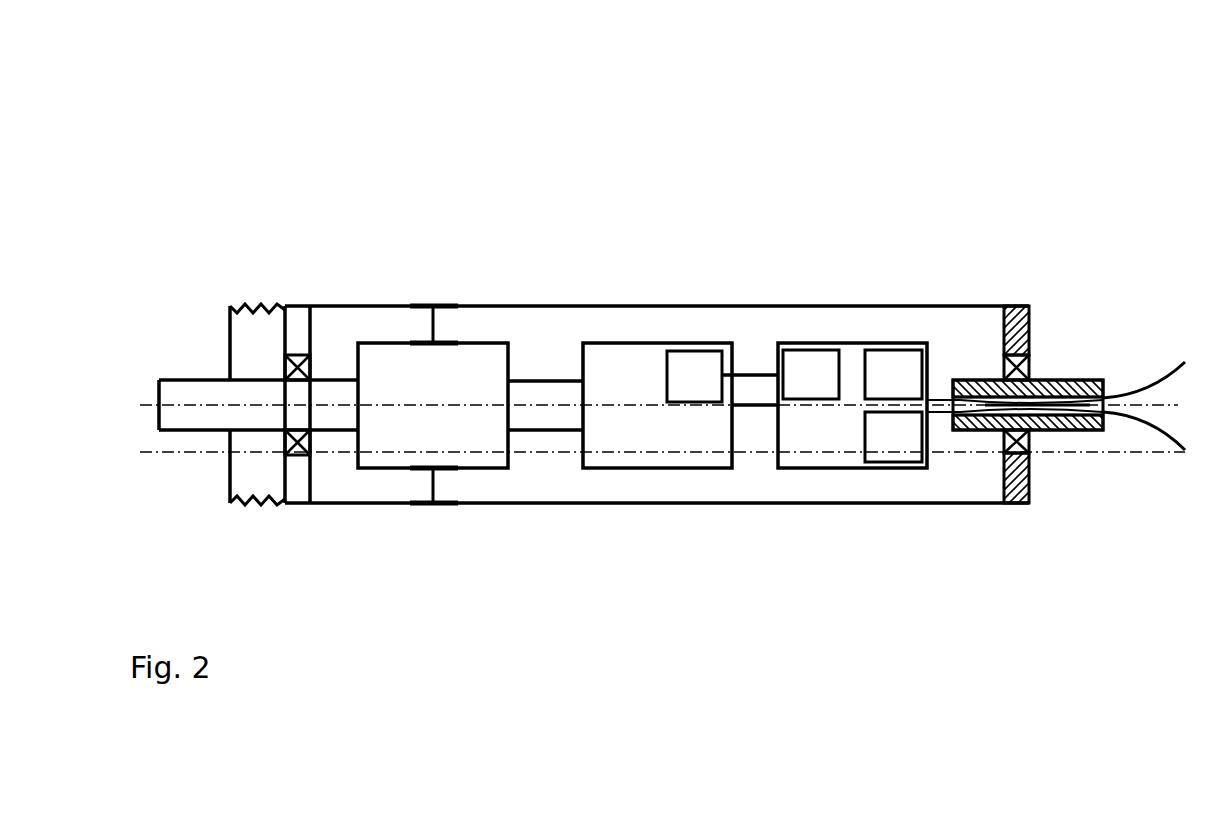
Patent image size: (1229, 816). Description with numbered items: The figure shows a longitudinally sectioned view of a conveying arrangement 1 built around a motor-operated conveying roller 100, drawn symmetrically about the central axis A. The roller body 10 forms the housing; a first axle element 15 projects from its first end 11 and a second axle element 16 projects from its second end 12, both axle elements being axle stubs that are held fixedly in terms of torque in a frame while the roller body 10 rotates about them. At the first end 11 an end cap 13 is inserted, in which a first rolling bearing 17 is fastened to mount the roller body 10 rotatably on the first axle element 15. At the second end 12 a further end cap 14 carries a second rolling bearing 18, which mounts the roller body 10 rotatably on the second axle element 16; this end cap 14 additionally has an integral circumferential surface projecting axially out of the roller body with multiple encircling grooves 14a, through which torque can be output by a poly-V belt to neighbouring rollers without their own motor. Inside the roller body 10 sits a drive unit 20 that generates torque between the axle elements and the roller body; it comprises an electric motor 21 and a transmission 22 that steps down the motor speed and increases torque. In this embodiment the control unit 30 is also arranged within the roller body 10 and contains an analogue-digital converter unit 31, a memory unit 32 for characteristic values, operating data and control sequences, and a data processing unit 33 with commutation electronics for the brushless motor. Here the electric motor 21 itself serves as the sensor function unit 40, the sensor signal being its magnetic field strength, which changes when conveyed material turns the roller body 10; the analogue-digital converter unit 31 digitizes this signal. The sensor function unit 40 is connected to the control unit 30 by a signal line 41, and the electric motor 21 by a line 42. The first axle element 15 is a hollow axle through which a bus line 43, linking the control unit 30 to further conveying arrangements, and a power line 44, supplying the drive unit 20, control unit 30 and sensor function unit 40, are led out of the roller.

The conveying arrangement 1 is at (1137, 160).
The roller body 10 is at (812, 305).
The first end 11 is at (1033, 290).
The second end 12 is at (248, 205).
The end cap 13 is at (1012, 500).
The end cap 14 is at (302, 492).
The encircling grooves 14a is at (237, 503).
The first axle element 15 is at (1067, 382).
The second axle element 16 is at (213, 395).
The first rolling bearing 17 is at (1027, 445).
The second rolling bearing 18 is at (297, 453).
The drive unit 20 is at (552, 314).
The electric motor 21 is at (638, 452).
The transmission 22 is at (450, 452).
The control unit 30 is at (788, 450).
The analogue-digital converter unit 31 is at (793, 382).
The memory unit 32 is at (910, 382).
The data processing unit 33 is at (910, 444).
The sensor function unit 40 is at (677, 397).
The signal line 41 is at (752, 373).
The line 42 is at (770, 405).
The bus line 43 is at (1142, 388).
The power line 44 is at (1142, 430).
The motor-operated conveying roller 100 is at (703, 265).
The axis A is at (675, 418).